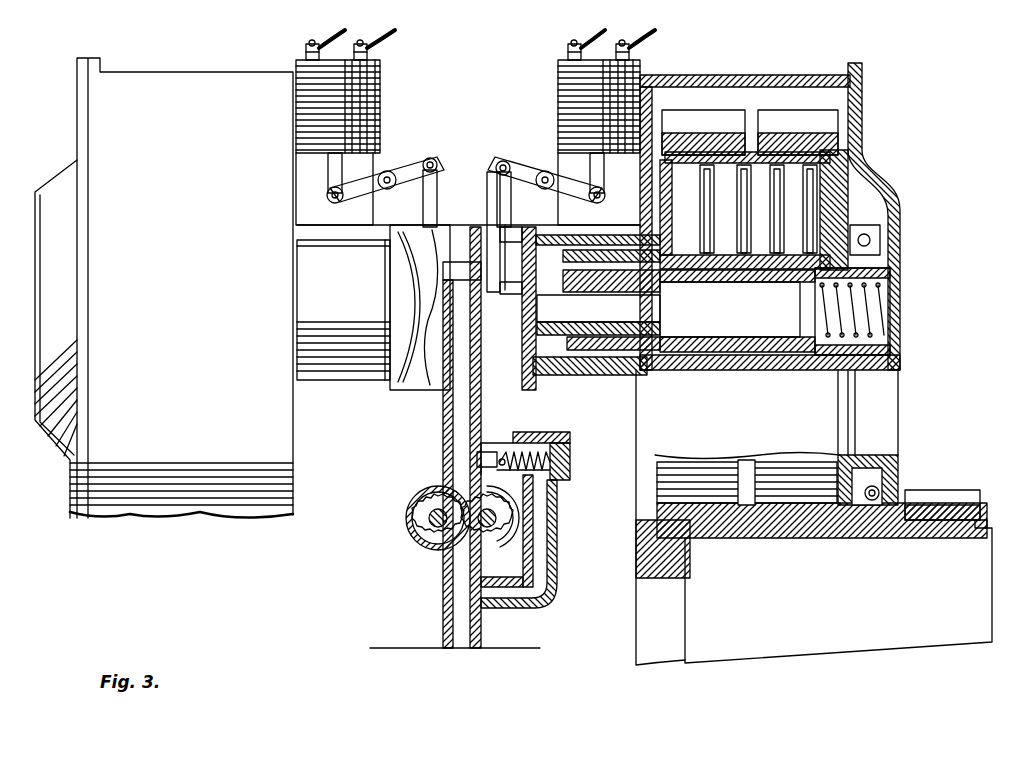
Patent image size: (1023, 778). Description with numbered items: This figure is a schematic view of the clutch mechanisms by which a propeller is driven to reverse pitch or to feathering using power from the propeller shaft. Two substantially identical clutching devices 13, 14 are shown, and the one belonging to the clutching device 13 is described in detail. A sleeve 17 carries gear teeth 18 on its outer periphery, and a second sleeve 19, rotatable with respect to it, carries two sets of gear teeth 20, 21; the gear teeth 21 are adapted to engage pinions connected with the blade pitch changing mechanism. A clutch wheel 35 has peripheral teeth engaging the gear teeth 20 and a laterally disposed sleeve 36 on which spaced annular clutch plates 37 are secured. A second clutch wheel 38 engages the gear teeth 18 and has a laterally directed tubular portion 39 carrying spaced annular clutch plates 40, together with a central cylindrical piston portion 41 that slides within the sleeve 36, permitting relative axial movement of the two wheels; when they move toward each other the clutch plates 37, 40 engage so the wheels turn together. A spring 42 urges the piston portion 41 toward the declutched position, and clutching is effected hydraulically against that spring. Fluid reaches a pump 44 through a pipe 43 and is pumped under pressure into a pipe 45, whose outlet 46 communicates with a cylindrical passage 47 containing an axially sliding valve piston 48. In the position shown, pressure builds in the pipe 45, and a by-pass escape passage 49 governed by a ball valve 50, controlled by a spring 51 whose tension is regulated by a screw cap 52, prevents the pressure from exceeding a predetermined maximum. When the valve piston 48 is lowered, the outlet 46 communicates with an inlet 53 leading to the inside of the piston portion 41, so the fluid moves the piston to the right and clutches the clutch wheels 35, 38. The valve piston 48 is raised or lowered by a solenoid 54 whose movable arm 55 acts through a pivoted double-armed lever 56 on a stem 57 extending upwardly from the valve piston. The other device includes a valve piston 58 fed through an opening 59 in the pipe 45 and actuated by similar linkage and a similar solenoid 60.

The clutching device 13 is at (862, 100).
The clutching device 14 is at (100, 97).
The sleeve 17 is at (730, 540).
The gear teeth 18 is at (695, 522).
The second sleeve 19 is at (806, 530).
The gear teeth 20 is at (848, 530).
The gear teeth 21 is at (945, 502).
The clutch wheel 35 is at (850, 158).
The sleeve 36 is at (768, 370).
The clutch plates 37 is at (786, 216).
The clutch wheel 38 is at (702, 130).
The tubular portion 39 is at (760, 150).
The clutch plates 40 is at (800, 192).
The piston portion 41 is at (848, 306).
The spring 42 is at (880, 282).
The pipe 43 is at (460, 622).
The pump 44 is at (404, 518).
The pipe 45 is at (446, 402).
The outlet 46 is at (468, 262).
The cylindrical passage 47 is at (518, 380).
The valve piston 48 is at (548, 236).
The by-pass escape passage 49 is at (540, 540).
The ball valve 50 is at (522, 434).
The spring 51 is at (545, 474).
The screw cap 52 is at (571, 452).
The inlet 53 is at (598, 305).
The solenoid 54 is at (598, 70).
The movable arm 55 is at (598, 165).
The double-armed lever 56 is at (540, 176).
The stem 57 is at (440, 162).
The valve piston 58 is at (394, 384).
The opening 59 is at (448, 275).
The solenoid 60 is at (380, 82).